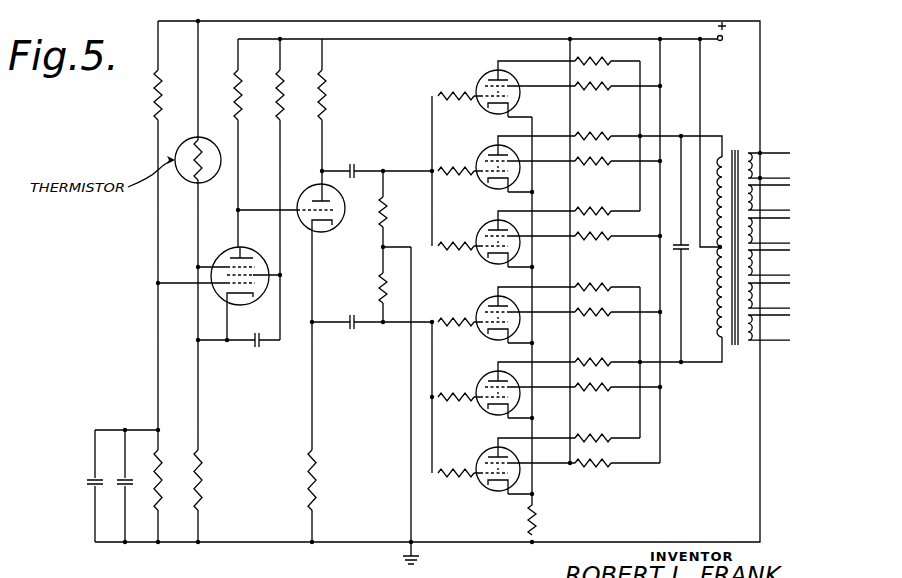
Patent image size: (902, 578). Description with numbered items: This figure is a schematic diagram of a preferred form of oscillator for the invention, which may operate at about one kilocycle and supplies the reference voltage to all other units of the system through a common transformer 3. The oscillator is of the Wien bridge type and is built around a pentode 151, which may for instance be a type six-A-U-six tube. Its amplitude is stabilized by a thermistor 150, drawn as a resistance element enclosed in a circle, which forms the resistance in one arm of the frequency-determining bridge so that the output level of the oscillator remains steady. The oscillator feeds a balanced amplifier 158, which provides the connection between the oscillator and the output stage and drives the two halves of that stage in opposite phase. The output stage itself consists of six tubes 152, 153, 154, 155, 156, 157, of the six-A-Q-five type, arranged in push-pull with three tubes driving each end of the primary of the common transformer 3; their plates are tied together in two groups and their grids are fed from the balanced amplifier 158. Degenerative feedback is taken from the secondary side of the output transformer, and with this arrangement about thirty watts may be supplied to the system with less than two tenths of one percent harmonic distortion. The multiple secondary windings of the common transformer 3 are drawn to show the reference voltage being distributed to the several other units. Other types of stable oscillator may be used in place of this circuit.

The thermistor 150 is at (204, 137).
The pentode 151 is at (224, 249).
The tube 152 is at (476, 82).
The tube 153 is at (476, 157).
The tube 154 is at (476, 232).
The tube 155 is at (476, 308).
The tube 156 is at (476, 383).
The tube 157 is at (476, 459).
The balanced amplifier 158 is at (338, 232).
The common transformer 3 is at (736, 353).